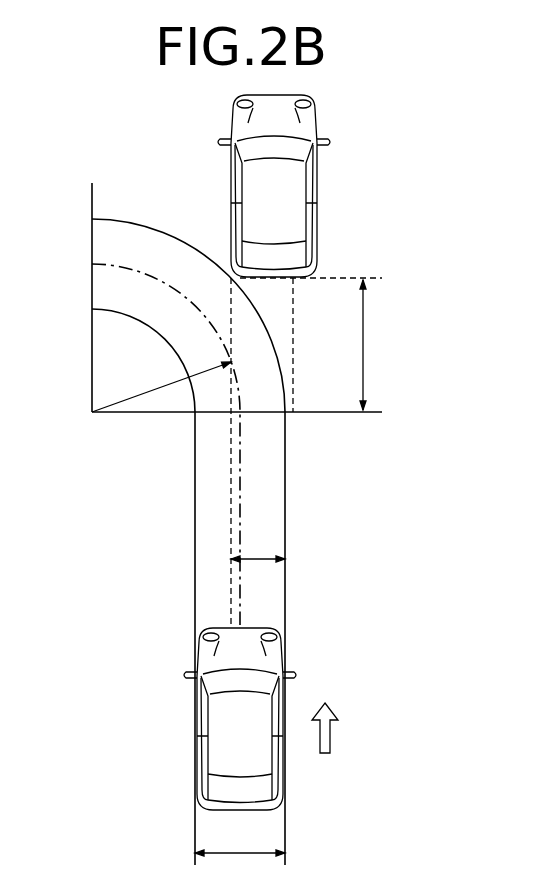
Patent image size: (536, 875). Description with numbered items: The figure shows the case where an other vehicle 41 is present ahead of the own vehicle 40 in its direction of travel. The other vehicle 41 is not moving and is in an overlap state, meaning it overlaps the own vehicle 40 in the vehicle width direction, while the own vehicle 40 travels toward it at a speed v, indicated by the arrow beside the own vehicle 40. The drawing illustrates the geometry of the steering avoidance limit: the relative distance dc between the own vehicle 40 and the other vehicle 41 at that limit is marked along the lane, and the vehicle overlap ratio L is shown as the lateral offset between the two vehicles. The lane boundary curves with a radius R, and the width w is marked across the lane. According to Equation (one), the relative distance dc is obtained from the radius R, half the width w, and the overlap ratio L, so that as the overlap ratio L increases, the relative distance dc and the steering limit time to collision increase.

The own vehicle 40 is at (197, 770).
The other vehicle 41 is at (318, 177).
The curve radius R is at (161, 387).
The relative distance dc is at (382, 345).
The vehicle overlap ratio L is at (258, 549).
The vehicle width w is at (240, 843).
The speed v is at (332, 728).